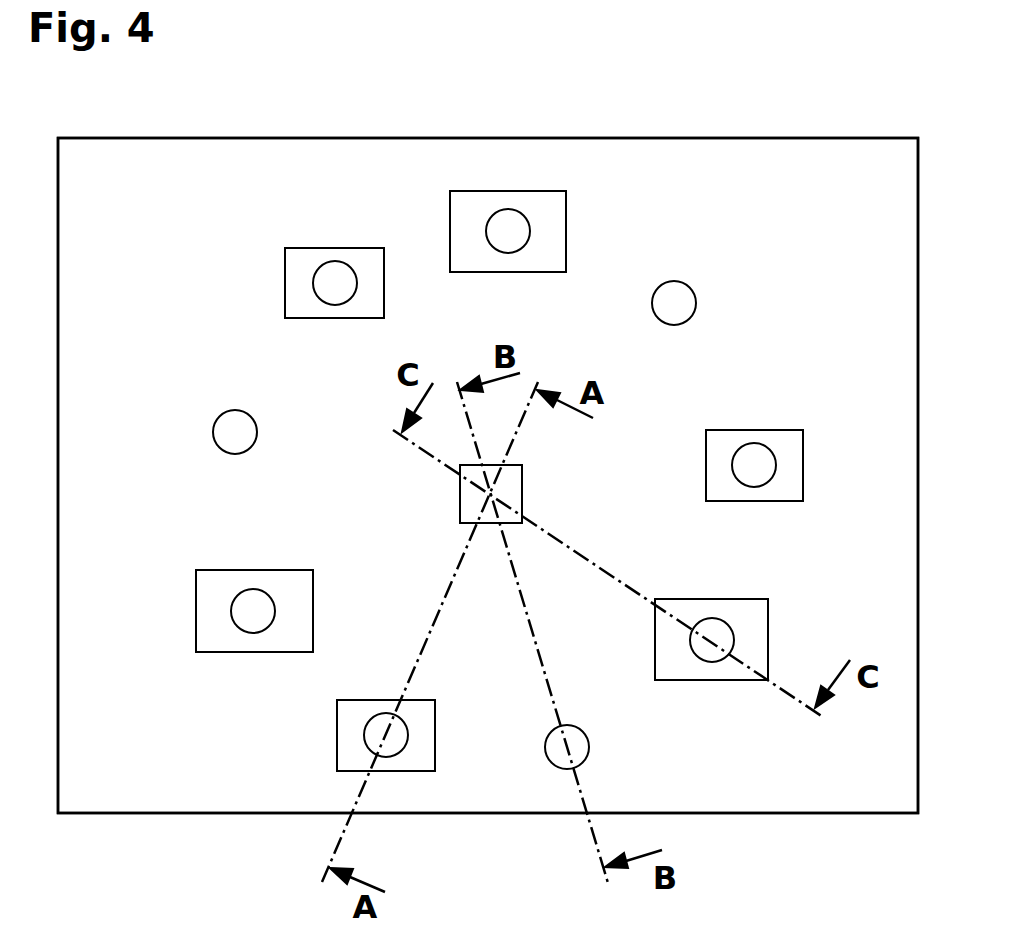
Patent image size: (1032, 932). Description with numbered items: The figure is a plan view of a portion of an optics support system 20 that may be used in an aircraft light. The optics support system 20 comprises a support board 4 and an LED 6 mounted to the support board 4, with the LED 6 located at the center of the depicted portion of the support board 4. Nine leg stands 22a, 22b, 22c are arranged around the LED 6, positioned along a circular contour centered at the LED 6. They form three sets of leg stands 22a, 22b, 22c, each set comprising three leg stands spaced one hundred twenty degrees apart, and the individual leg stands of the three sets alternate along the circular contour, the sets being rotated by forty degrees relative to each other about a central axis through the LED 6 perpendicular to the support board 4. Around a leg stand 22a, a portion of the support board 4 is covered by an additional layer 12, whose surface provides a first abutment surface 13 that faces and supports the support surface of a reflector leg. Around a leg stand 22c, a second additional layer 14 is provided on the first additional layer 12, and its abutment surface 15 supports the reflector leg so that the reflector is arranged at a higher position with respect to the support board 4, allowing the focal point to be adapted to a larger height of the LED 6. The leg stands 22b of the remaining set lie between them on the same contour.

The support board 4 is at (833, 162).
The optics support system 20 is at (684, 126).
The LED 6 is at (522, 490).
The additional layer 12 is at (353, 238).
The first abutment surface 13 is at (295, 298).
The second additional layer 14 is at (580, 213).
The abutment surface 15 is at (540, 203).
The leg stand 22a is at (300, 254).
The leg stand 22b is at (685, 266).
The leg stand 22c is at (479, 278).